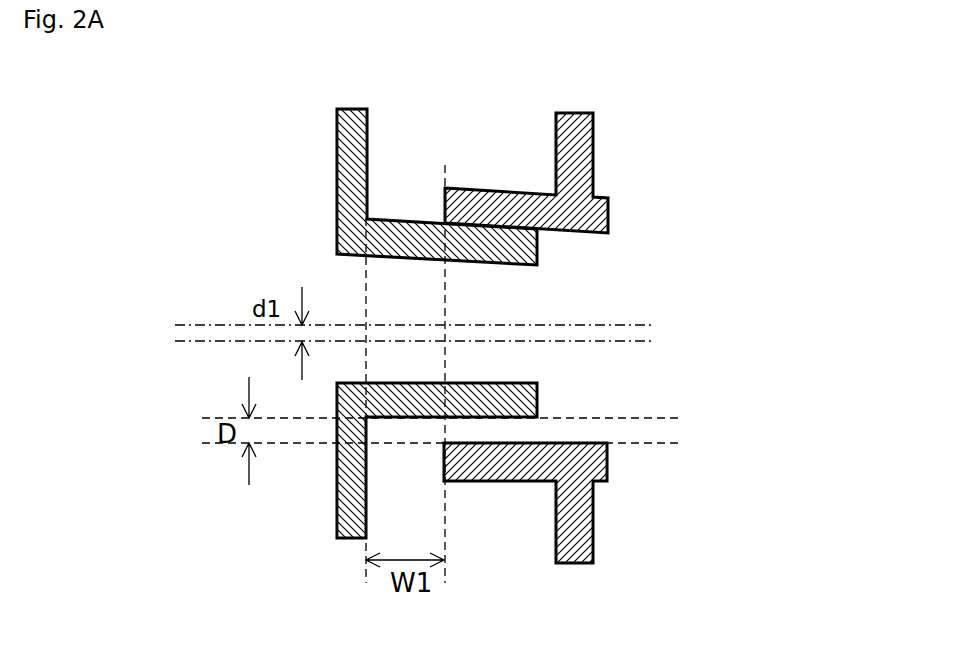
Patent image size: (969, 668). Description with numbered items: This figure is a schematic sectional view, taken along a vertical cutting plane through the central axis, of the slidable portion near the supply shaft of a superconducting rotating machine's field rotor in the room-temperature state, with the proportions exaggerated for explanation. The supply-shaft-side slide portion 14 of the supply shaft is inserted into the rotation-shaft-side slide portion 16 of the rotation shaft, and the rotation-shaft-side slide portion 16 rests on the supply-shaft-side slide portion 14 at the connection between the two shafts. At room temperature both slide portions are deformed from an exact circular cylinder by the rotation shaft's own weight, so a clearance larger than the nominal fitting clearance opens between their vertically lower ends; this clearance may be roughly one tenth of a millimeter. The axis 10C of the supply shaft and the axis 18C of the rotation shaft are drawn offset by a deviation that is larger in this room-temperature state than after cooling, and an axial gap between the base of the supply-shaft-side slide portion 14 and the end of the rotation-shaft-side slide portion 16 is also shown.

The axis of the supply shaft 10C is at (192, 323).
The supply-shaft-side slide portion 14 is at (388, 218).
The rotation-shaft-side slide portion 16 is at (475, 188).
The axis of the rotation shaft 18C is at (610, 341).